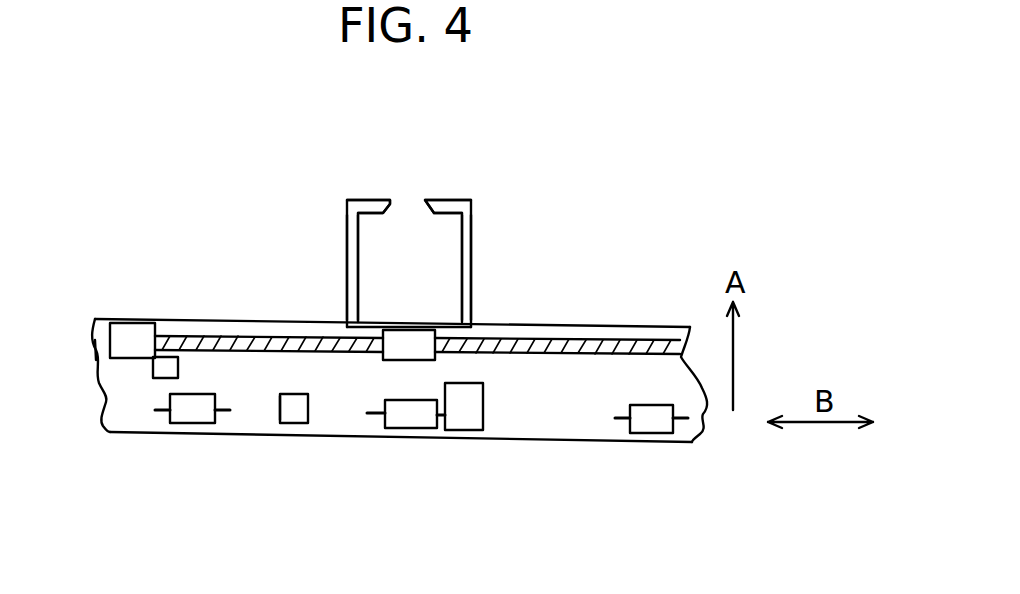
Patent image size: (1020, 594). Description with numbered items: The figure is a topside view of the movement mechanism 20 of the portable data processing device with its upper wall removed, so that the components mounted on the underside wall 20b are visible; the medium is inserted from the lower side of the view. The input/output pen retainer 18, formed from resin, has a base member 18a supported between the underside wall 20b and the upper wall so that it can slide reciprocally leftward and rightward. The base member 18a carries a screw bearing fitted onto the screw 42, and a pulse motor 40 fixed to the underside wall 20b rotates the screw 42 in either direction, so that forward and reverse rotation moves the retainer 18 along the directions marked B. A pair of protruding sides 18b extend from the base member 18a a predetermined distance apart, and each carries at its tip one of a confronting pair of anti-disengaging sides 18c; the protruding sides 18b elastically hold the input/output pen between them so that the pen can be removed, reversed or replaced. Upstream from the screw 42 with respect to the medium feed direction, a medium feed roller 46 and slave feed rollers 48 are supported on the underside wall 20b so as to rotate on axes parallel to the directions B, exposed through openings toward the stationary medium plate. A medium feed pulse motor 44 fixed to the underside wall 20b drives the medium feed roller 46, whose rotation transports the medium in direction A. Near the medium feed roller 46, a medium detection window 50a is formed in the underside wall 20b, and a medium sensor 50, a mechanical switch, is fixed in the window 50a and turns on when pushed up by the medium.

The input/output pen retainer 18 is at (421, 237).
The base member 18a is at (420, 333).
The protruding sides 18b is at (352, 258).
The anti-disengaging sides 18c is at (437, 204).
The movement mechanism 20 is at (560, 425).
The underside wall 20b is at (113, 398).
The pulse motor 40 is at (128, 338).
The screw 42 is at (568, 344).
The medium feed pulse motor 44 is at (470, 413).
The medium feed roller 46 is at (412, 415).
The slave feed rollers 48 is at (200, 414).
The medium sensor 50 is at (295, 413).
The medium detection window 50a is at (280, 408).